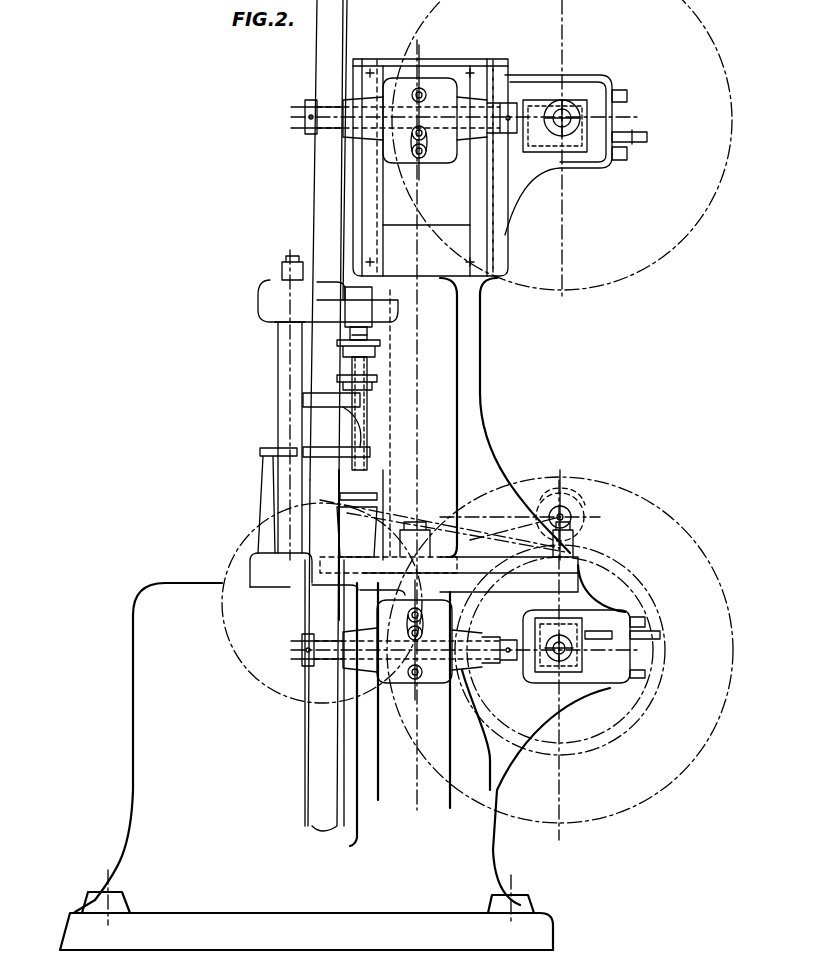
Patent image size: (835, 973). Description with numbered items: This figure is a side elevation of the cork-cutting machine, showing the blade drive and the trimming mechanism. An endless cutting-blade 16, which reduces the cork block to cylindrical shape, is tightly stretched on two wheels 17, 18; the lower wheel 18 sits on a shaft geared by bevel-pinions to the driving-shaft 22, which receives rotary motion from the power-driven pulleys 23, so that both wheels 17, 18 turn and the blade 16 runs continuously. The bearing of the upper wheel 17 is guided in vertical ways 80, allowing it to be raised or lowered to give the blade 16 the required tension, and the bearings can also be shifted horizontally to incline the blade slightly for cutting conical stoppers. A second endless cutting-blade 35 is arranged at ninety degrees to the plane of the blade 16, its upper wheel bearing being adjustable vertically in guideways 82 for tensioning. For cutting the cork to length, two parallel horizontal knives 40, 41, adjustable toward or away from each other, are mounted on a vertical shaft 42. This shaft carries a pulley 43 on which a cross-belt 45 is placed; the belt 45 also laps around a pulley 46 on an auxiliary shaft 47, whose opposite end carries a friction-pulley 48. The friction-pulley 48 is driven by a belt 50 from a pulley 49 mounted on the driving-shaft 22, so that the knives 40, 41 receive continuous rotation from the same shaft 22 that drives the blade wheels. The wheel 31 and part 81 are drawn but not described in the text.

The endless cutting-blade 16 is at (308, 431).
The upper wheel 17 is at (326, 206).
The lower wheel 18 is at (312, 735).
The driving-shaft 22 is at (548, 668).
The power-driven pulleys 23 is at (646, 716).
The lower band wheel 31 is at (604, 826).
The second endless cutting-blade 35 is at (735, 345).
The horizontal knife 40 is at (340, 346).
The horizontal knife 41 is at (338, 383).
The vertical shaft 42 is at (371, 431).
The pulley 43 is at (372, 500).
The cross-belt 45 is at (500, 500).
The pulley 46 is at (591, 517).
The auxiliary shaft 47 is at (558, 515).
The friction-pulley 48 is at (572, 503).
The pulley 49 is at (584, 744).
The belt 50 is at (597, 543).
The vertical ways 80 is at (420, 178).
The upper wheel bearing plate 81 is at (548, 150).
The guideways 82 is at (503, 262).